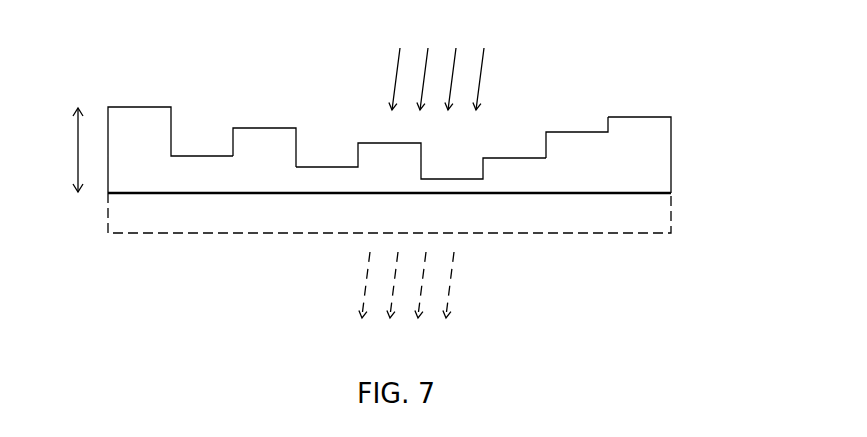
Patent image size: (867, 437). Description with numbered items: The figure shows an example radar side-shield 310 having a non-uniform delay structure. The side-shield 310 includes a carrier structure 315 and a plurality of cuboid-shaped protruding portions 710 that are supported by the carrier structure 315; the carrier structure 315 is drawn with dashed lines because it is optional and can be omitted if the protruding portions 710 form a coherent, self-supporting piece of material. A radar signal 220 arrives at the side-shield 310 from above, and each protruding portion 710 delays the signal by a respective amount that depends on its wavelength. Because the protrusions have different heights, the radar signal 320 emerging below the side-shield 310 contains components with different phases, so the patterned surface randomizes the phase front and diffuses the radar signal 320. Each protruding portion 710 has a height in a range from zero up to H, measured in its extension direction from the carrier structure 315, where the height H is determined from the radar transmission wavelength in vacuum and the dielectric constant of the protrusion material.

The side-shield 310 is at (714, 77).
The cuboid-shaped protruding portions 710 is at (262, 138).
The carrier structure 315 is at (264, 223).
The radar signal 220 is at (436, 64).
The radar signal 320 is at (406, 305).
The height H is at (69, 150).